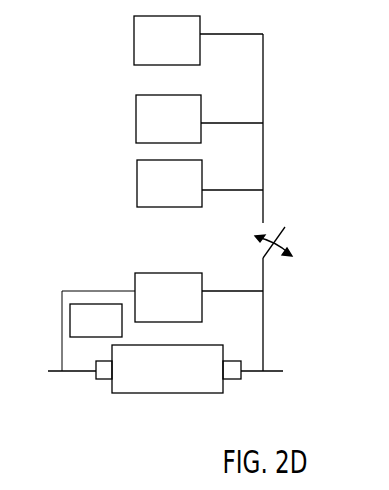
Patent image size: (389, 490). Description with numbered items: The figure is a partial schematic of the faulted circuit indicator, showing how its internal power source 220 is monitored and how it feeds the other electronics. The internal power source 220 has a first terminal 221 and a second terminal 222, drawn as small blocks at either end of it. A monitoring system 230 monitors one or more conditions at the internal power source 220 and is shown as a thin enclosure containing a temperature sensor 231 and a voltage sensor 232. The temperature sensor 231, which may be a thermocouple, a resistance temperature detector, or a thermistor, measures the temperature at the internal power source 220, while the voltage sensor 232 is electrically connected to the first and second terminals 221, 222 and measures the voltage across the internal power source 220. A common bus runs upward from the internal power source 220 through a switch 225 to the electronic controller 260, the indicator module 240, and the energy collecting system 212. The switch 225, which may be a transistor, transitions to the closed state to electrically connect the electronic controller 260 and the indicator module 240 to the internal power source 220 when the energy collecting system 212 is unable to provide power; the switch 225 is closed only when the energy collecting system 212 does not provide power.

The energy collecting system 212 is at (198, 40).
The indicator module 240 is at (199, 119).
The electronic controller 260 is at (200, 183).
The switch 225 is at (298, 233).
The monitoring system 230 is at (93, 276).
The temperature sensor 231 is at (96, 320).
The voltage sensor 232 is at (199, 297).
The internal power source 220 is at (165, 369).
The first terminal 221 is at (100, 377).
The second terminal 222 is at (235, 377).